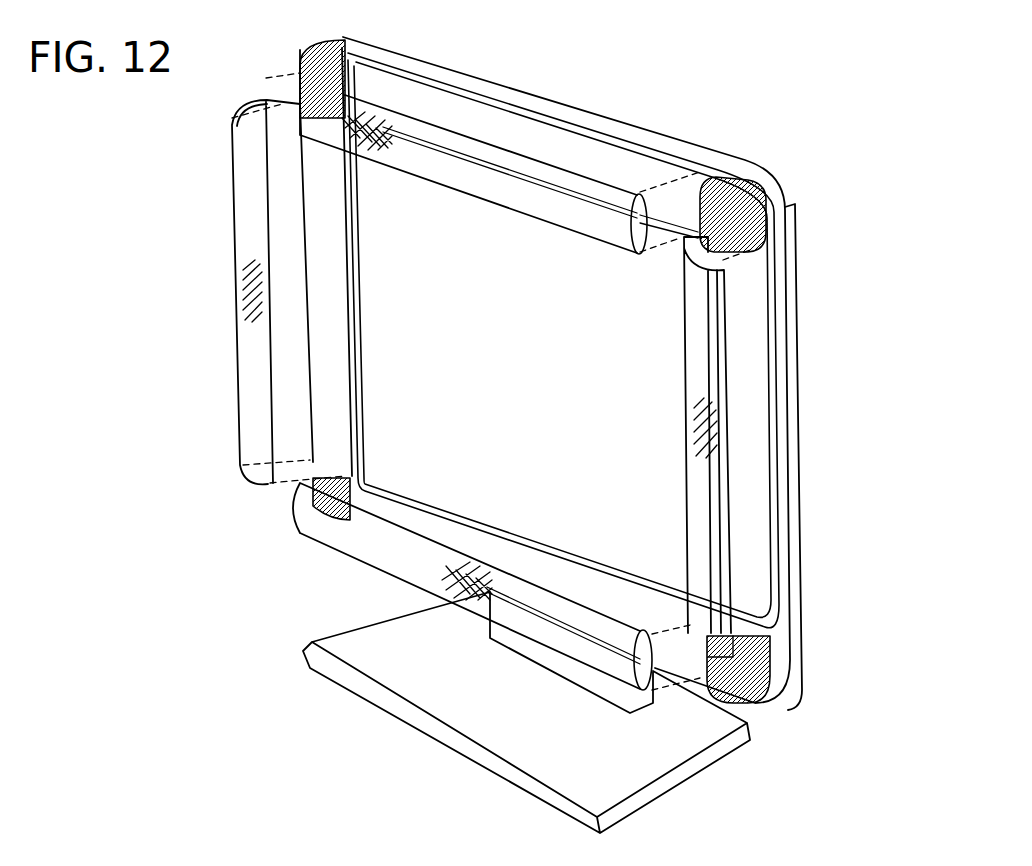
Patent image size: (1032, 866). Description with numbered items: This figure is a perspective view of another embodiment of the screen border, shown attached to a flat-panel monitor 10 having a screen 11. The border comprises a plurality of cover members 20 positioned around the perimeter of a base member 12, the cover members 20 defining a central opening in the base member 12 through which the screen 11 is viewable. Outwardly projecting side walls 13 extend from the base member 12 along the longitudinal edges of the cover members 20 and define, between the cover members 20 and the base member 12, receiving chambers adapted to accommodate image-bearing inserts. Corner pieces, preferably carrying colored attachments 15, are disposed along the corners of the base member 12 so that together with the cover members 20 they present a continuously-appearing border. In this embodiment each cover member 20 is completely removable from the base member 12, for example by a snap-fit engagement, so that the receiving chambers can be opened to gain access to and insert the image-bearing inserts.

The monitor 10 is at (795, 385).
The screen 11 is at (428, 240).
The base member 12 is at (668, 175).
The side walls 13 is at (421, 77).
The colored attachments 15 is at (327, 63).
The cover members 20 is at (558, 195).